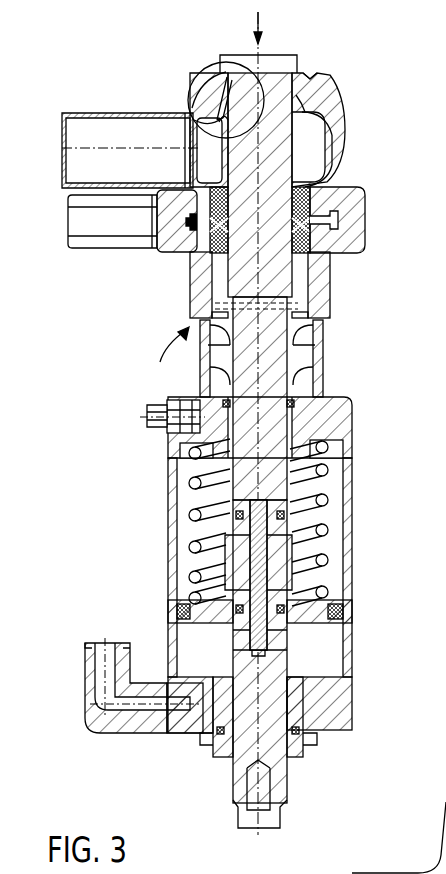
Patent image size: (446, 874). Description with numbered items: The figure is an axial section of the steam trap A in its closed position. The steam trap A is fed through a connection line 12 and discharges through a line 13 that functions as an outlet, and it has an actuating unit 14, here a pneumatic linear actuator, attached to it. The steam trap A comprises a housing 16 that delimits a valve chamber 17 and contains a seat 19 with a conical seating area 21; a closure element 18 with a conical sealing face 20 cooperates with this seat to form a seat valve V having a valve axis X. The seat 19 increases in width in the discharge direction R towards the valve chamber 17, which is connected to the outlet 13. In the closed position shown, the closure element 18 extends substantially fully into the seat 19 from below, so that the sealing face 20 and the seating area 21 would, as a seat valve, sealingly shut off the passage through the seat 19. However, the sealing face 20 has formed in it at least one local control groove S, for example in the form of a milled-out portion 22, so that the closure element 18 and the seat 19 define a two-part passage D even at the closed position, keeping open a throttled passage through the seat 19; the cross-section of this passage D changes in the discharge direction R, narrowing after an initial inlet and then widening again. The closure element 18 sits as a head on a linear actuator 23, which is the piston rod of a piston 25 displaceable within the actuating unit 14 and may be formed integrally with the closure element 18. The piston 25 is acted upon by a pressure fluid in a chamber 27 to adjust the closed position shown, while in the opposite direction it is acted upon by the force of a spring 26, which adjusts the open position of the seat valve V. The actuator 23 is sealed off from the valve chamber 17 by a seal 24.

The connection line 12 is at (282, 62).
The line 13 is at (87, 125).
The actuating unit 14 is at (352, 557).
The housing 16 is at (327, 85).
The valve chamber 17 is at (323, 142).
The closure element 18 is at (332, 113).
The seat 19 is at (218, 95).
The conical sealing face 20 is at (296, 100).
The conical seating area 21 is at (208, 107).
The milled-out portion 22 is at (200, 126).
The linear actuator 23 is at (320, 172).
The seal 24 is at (205, 258).
The piston 25 is at (302, 618).
The spring 26 is at (332, 473).
The chamber 27 is at (192, 650).
The discharge direction R is at (255, 27).
The seat valve V is at (316, 72).
The control groove S is at (220, 123).
The passage D is at (231, 103).
The valve axis X is at (262, 332).
The steam trap A is at (167, 354).